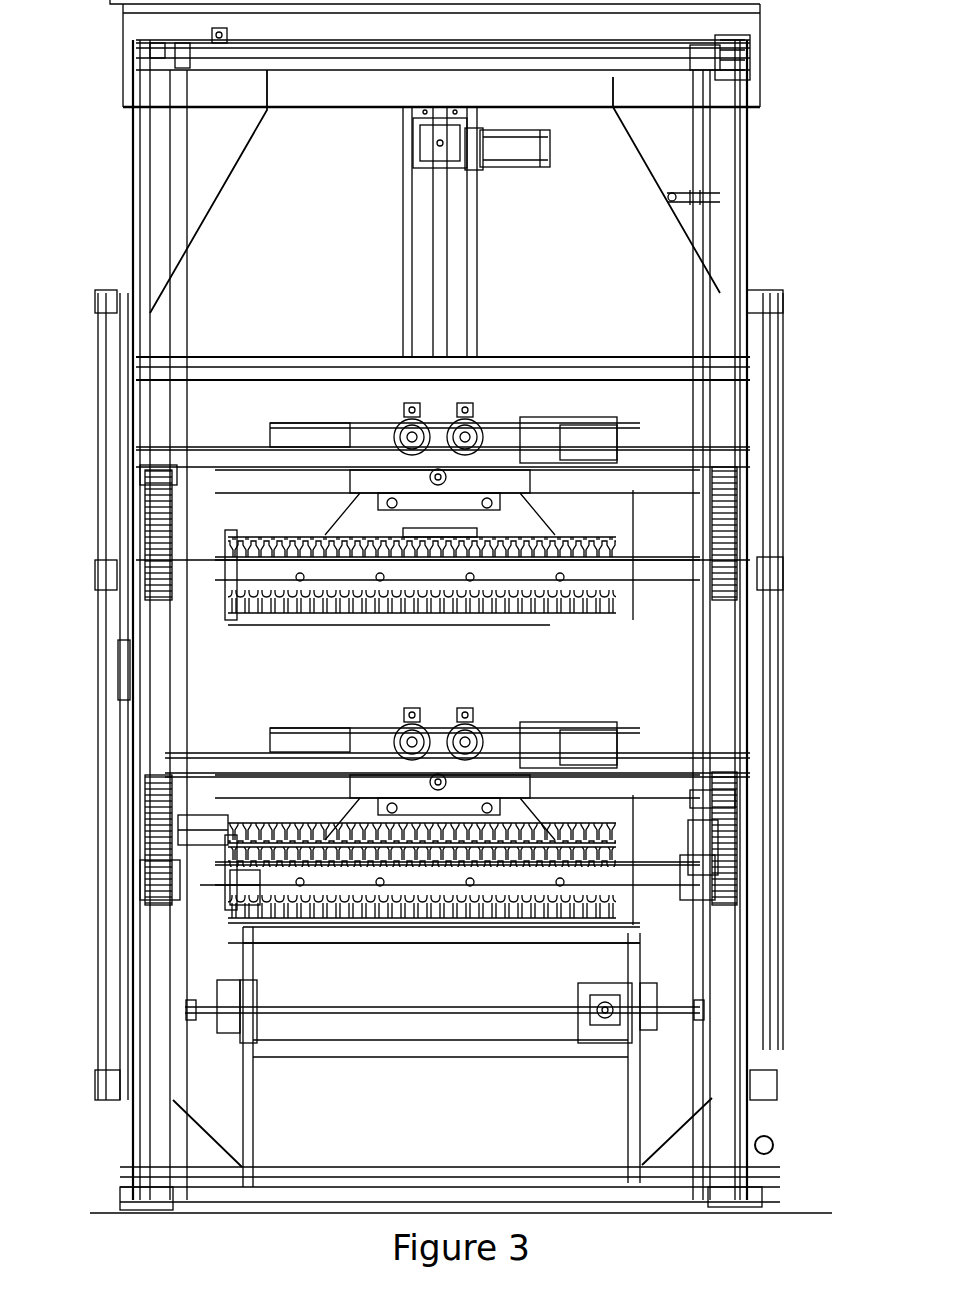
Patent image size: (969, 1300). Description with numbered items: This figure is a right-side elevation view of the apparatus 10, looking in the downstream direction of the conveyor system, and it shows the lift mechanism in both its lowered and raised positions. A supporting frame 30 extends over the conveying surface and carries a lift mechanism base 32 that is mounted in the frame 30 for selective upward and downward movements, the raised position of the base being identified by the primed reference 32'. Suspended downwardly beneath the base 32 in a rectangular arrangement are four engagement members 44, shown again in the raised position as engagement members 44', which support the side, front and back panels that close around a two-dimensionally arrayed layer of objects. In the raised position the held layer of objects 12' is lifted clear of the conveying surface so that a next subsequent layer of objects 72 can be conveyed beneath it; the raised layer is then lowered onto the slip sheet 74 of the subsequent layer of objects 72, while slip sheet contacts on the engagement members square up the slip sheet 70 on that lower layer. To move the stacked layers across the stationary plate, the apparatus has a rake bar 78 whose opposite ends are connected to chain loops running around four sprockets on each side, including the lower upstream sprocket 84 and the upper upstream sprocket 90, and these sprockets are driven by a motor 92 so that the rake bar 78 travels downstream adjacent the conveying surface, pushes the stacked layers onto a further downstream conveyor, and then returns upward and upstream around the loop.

The apparatus 10 is at (782, 224).
The supporting frame 30 is at (133, 203).
The lift mechanism base 32 is at (528, 749).
The lift mechanism base in raised position 32' is at (531, 440).
The engagement members 44 is at (422, 776).
The engagement members in raised position 44' is at (330, 457).
The slip sheet 70 is at (145, 510).
The layer of objects in raised position 12' is at (157, 720).
The slip sheet of the subsequent layer of objects 74 is at (265, 842).
The rake bar 78 is at (733, 797).
The upper upstream sprocket 90 is at (145, 860).
The lower upstream sprocket 84 is at (143, 872).
The subsequent layer of objects 72 is at (262, 888).
The motor 92 is at (580, 1005).